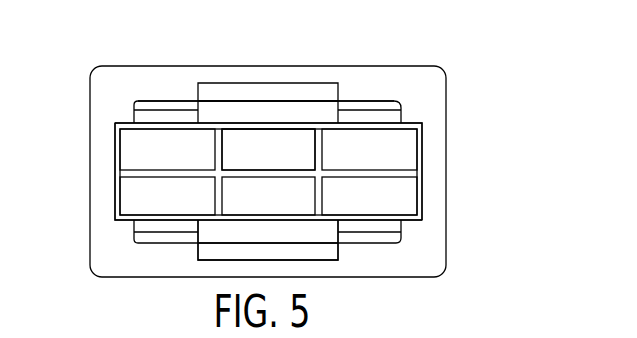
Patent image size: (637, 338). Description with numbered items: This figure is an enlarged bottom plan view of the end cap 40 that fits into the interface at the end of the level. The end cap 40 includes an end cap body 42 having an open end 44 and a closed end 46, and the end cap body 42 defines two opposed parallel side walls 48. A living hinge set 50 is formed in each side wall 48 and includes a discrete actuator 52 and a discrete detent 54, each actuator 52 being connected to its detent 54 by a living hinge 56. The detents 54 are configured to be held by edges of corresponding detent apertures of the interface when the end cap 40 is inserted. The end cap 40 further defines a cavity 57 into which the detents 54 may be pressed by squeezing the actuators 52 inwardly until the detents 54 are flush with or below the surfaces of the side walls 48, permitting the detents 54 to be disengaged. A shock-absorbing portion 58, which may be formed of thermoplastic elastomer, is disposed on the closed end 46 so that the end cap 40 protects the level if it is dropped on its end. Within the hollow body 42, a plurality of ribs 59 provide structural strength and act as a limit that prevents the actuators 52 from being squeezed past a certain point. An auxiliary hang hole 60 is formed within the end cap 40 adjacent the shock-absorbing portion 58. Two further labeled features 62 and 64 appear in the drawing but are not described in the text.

The end cap 40 is at (402, 55).
The end cap body 42 is at (423, 202).
The open end 44 is at (150, 188).
The closed end 46 is at (119, 124).
The side walls 48 is at (122, 218).
The living hinge set 50 is at (217, 79).
The actuator 52 is at (313, 100).
The detent 54 is at (272, 103).
The living hinge 56 is at (214, 118).
The cavity 57 is at (271, 151).
The shock-absorbing portion 58 is at (359, 84).
The ribs 59 is at (386, 214).
The auxiliary hang hole 60 is at (327, 251).
The lower tab line 62 is at (207, 250).
The lower tab 64 is at (267, 227).